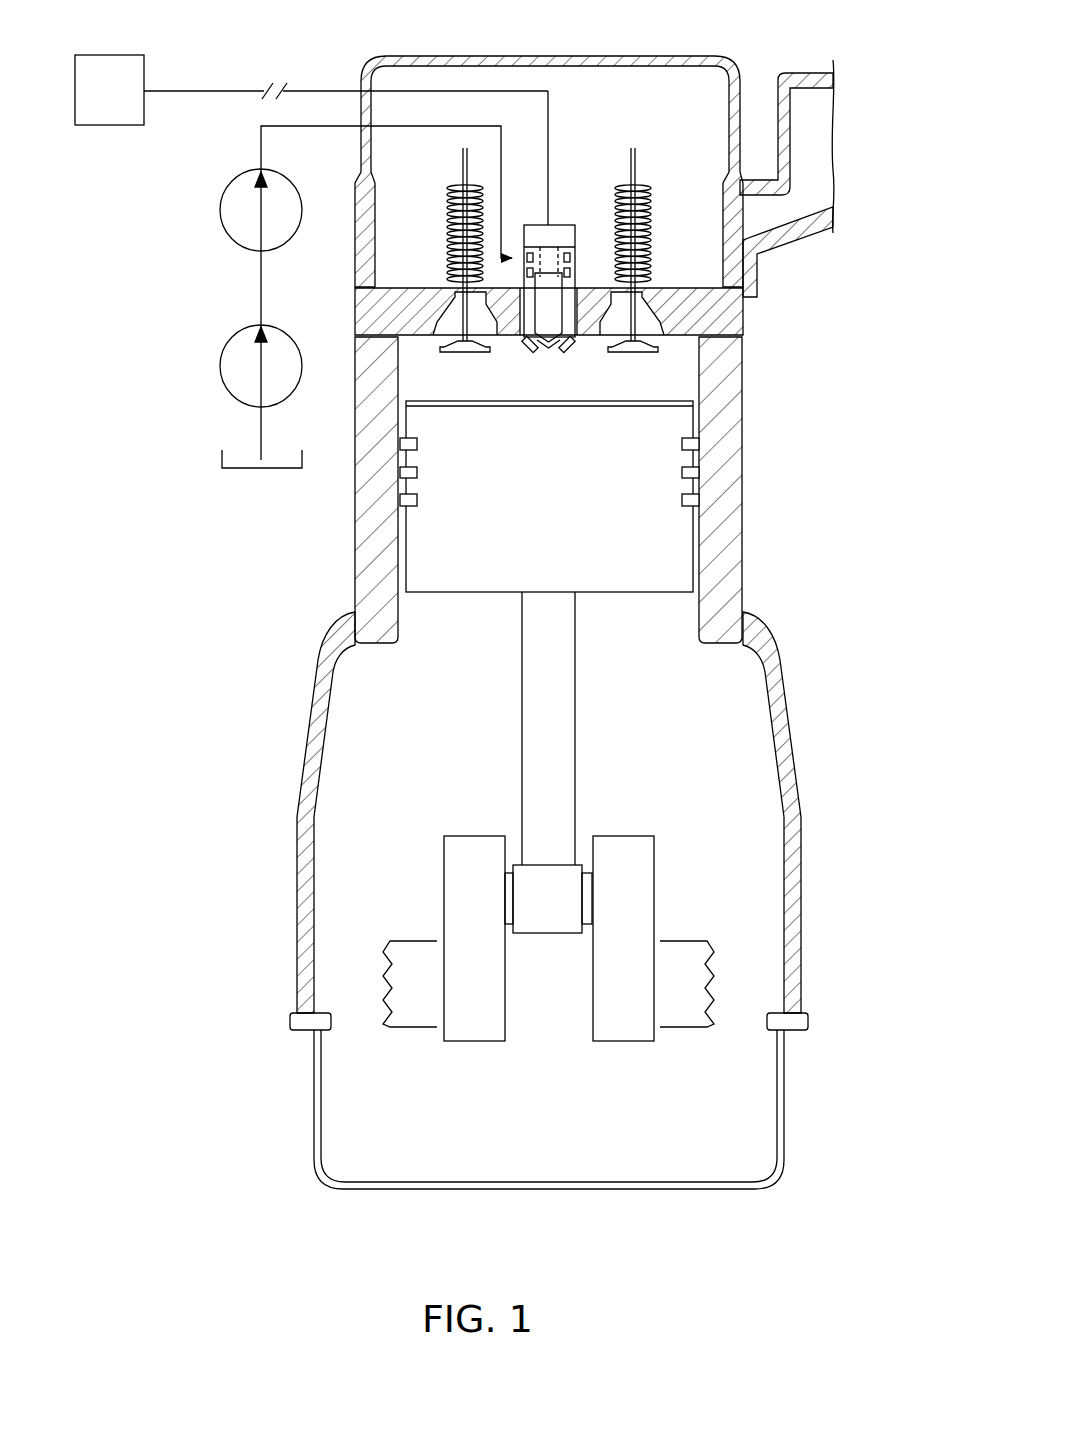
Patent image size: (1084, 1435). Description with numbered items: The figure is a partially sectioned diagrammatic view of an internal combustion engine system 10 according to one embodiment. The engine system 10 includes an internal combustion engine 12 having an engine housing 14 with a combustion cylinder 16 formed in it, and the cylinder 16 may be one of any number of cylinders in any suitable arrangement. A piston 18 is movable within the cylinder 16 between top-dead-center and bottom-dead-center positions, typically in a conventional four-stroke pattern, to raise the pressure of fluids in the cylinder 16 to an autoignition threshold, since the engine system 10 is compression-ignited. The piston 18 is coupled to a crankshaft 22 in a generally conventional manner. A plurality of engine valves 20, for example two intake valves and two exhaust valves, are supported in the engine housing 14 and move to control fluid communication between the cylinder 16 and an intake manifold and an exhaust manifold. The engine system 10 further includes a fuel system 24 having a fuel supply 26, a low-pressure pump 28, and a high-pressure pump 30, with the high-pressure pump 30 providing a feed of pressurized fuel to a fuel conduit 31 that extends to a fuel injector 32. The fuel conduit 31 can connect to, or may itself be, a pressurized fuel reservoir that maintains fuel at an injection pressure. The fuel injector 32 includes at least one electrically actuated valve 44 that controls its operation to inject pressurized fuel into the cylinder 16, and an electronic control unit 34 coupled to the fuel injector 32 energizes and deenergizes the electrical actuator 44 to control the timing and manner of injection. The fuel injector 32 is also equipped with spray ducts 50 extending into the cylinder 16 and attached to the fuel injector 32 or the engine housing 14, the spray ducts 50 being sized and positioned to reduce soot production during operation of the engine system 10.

The internal combustion engine system 10 is at (882, 63).
The internal combustion engine 12 is at (760, 540).
The engine housing 14 is at (743, 452).
The combustion cylinder 16 is at (692, 357).
The piston 18 is at (625, 583).
The engine valves 20 is at (465, 354).
The crankshaft 22 is at (620, 1042).
The fuel system 24 is at (204, 404).
The fuel supply 26 is at (222, 459).
The low-pressure pump 28 is at (220, 366).
The high-pressure pump 30 is at (220, 208).
The fuel conduit 31 is at (402, 127).
The fuel injector 32 is at (574, 224).
The electronic control unit 34 is at (108, 55).
The electrically actuated valve 44 is at (573, 272).
The spray ducts 50 is at (538, 352).